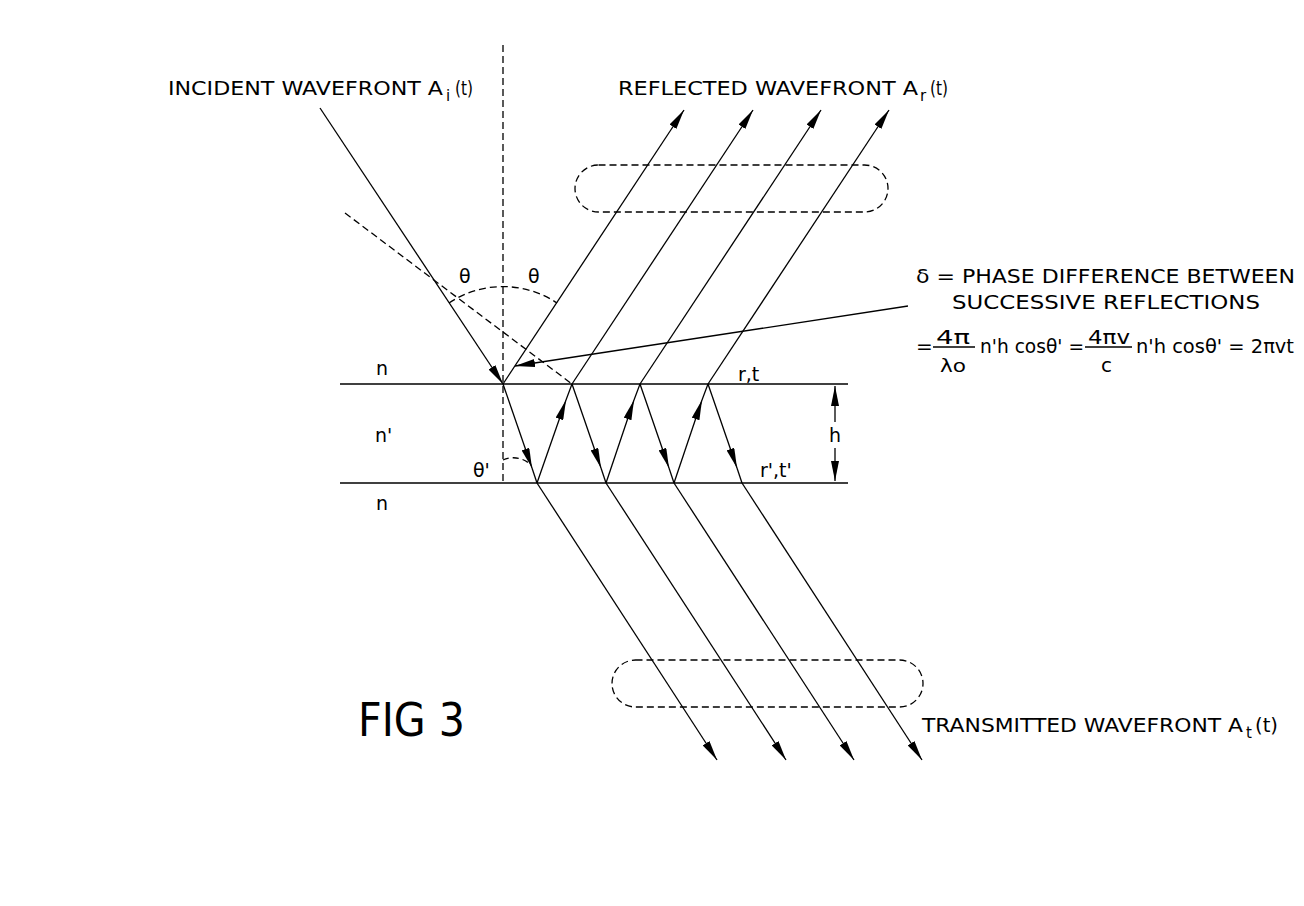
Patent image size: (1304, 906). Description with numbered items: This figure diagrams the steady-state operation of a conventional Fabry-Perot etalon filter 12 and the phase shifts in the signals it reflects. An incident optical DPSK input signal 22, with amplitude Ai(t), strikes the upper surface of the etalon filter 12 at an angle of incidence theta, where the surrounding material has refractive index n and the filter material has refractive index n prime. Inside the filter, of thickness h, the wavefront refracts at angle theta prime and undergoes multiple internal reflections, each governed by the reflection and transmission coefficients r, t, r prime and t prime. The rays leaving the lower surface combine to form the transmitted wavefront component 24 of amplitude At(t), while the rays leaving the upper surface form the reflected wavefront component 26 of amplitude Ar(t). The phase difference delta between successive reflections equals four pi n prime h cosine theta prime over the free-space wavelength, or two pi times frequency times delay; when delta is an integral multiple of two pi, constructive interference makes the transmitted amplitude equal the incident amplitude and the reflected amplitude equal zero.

The etalon filter 12 is at (517, 488).
The optical DPSK input signal 22 is at (358, 165).
The transmitted wavefront component 24 is at (614, 672).
The reflected wavefront component 26 is at (888, 186).